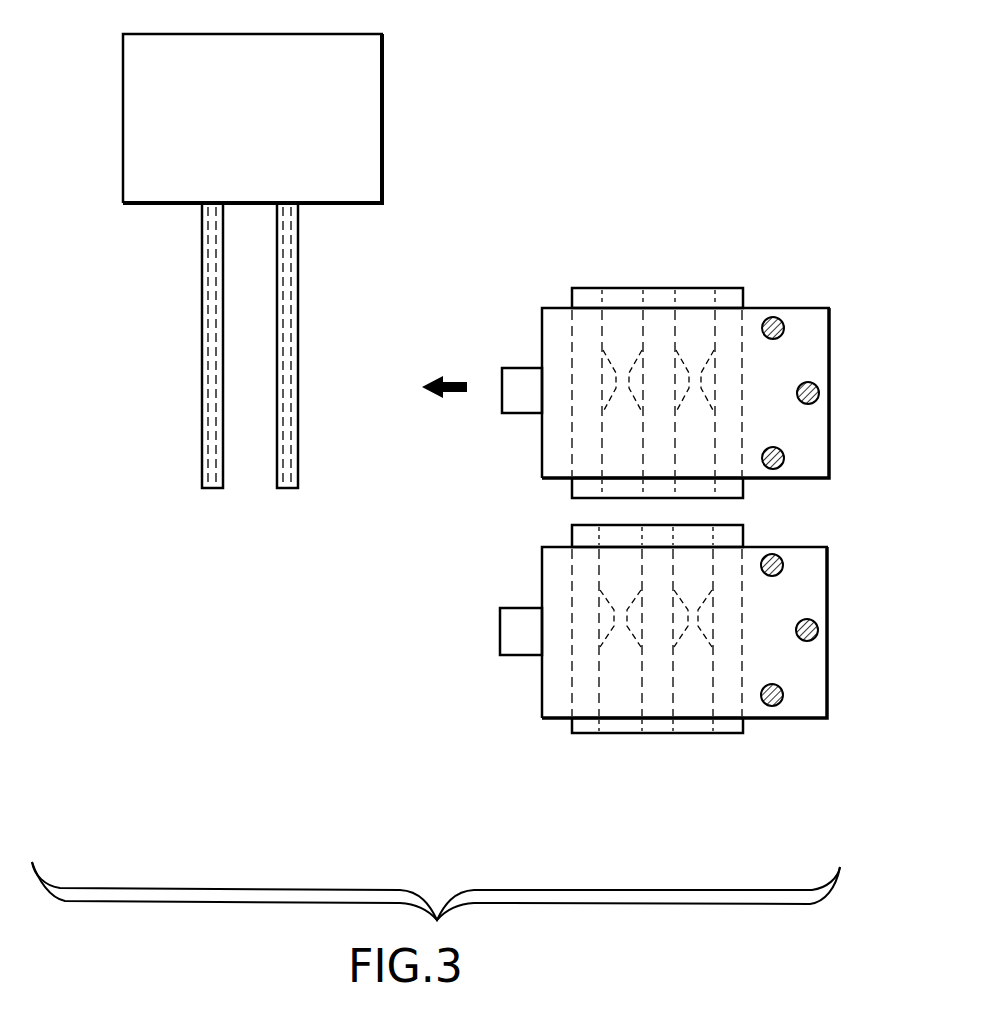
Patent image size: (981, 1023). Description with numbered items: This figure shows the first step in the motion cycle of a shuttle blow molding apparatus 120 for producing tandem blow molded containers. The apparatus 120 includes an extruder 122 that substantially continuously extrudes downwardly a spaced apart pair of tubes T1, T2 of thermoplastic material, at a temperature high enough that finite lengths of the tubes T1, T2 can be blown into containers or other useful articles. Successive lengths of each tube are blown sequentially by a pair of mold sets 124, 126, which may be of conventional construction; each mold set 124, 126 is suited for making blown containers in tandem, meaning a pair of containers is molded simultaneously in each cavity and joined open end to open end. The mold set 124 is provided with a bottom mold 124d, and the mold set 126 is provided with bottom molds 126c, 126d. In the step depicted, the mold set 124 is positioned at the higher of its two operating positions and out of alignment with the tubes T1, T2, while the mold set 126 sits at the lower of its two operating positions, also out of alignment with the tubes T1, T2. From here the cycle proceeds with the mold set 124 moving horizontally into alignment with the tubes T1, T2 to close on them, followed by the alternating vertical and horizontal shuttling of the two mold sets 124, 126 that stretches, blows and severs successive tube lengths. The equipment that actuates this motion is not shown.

The shuttle blow molding apparatus 120 is at (410, 38).
The extruder 122 is at (386, 125).
The tube T1 is at (202, 361).
The tube T2 is at (297, 357).
The mold set 124 is at (743, 297).
The bottom mold 124d is at (743, 486).
The mold set 126 is at (800, 558).
The bottom mold 126c is at (578, 534).
The bottom mold 126d is at (590, 722).